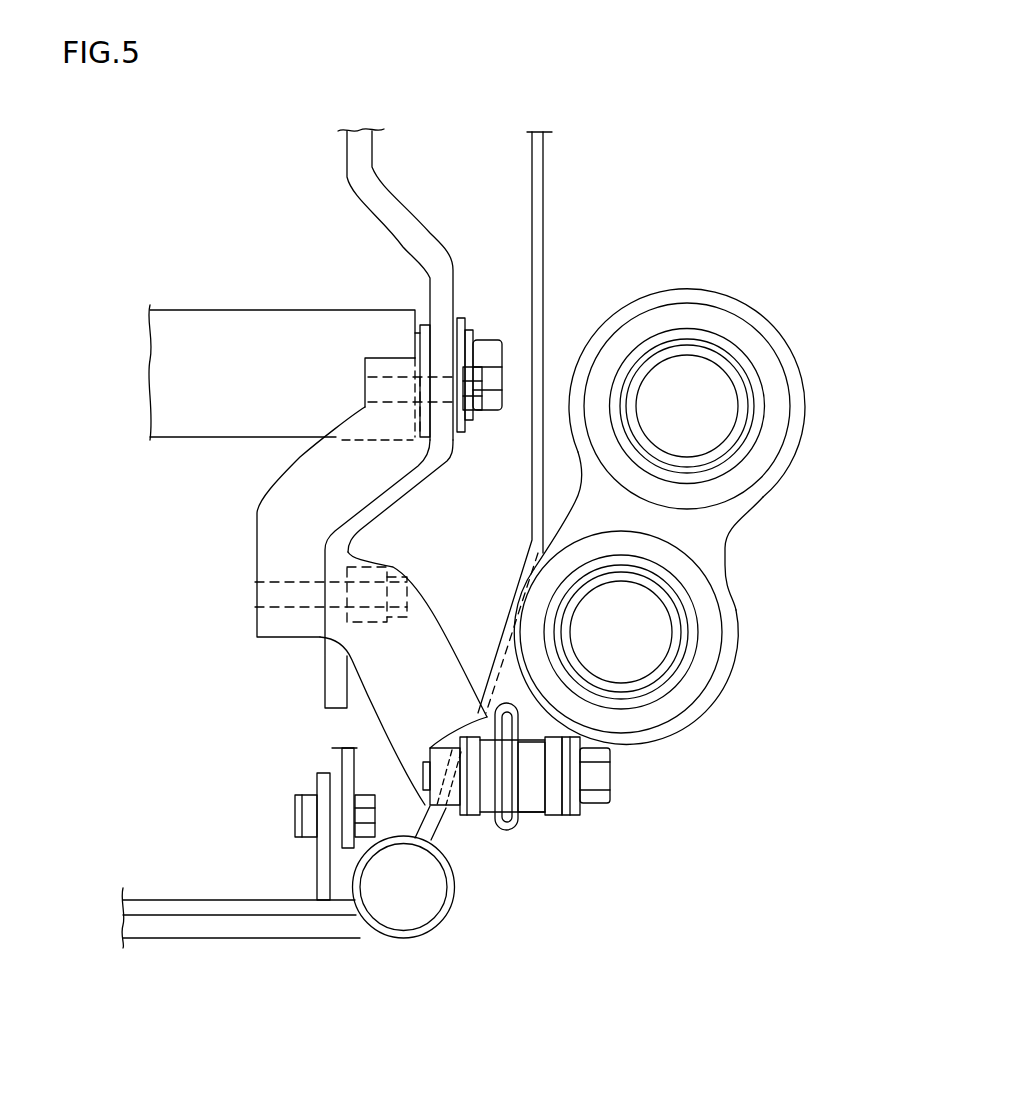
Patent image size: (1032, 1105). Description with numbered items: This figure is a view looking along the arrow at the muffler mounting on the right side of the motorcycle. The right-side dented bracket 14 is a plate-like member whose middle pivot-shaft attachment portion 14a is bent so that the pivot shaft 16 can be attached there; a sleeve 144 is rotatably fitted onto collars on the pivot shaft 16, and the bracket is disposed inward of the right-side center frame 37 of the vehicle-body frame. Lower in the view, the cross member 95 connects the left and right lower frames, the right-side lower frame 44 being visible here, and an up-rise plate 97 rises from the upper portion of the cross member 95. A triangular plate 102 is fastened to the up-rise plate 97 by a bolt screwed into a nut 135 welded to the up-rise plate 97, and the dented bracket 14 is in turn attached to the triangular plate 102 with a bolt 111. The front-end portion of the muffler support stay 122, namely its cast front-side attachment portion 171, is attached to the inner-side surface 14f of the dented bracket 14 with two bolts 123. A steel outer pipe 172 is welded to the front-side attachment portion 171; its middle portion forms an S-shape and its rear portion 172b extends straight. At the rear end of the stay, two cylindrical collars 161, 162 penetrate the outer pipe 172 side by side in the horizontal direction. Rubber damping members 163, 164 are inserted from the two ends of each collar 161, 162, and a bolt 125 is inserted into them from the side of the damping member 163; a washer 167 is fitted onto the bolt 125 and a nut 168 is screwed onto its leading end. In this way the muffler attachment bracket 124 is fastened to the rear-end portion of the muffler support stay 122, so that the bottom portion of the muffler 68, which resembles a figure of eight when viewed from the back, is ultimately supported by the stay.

The dented bracket 14 is at (396, 172).
The pivot-shaft attachment portion 14a is at (448, 297).
The inner-side surface 14f is at (427, 292).
The pivot shaft 16 is at (485, 345).
The center frame 37 is at (545, 180).
The muffler 68 is at (806, 395).
The bolt 123 is at (485, 383).
The sleeve 144 is at (190, 327).
The front-side attachment portion 171 is at (287, 478).
The muffler support stay 122 is at (242, 548).
The outer pipe 172 is at (387, 683).
The rear portion 172b is at (505, 828).
The nut 168 is at (440, 745).
The rubber damping member 164 is at (472, 817).
The muffler attachment bracket 124 is at (573, 807).
The collar 161 is at (523, 813).
The collar 162 is at (537, 800).
The rubber damping member 163 is at (557, 812).
The bolt 125 is at (602, 775).
The washer 167 is at (463, 820).
The lower frame 44 is at (357, 925).
The bolt 111 is at (380, 818).
The cross member 95 is at (193, 938).
The up-rise plate 97 is at (323, 862).
The triangular plate 102 is at (340, 758).
The nut 135 is at (303, 815).